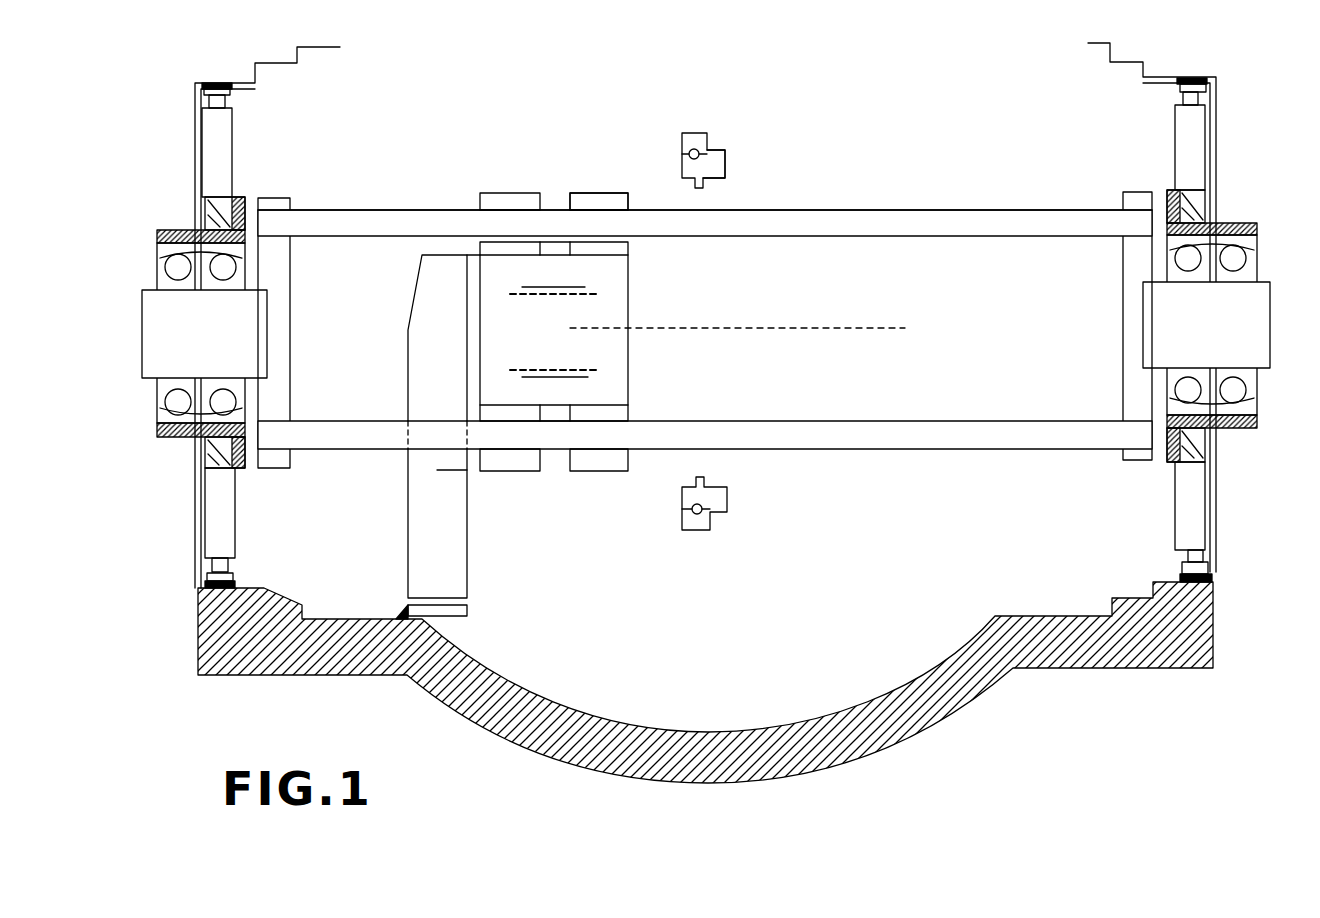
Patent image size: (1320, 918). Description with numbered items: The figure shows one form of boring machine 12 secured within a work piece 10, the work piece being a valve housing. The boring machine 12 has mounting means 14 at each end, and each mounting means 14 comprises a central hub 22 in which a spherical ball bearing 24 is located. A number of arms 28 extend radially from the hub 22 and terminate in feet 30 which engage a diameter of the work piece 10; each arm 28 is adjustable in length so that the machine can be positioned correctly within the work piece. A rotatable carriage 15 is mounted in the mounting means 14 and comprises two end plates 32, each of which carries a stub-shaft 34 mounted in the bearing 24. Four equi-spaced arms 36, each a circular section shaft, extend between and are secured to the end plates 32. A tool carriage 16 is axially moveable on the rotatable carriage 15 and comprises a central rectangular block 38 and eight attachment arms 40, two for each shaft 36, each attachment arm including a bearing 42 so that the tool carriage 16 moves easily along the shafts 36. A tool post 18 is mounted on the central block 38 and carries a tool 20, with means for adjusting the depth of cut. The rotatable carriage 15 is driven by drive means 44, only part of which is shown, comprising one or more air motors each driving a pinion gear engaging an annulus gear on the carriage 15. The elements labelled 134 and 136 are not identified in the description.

The work piece 10 is at (990, 685).
The boring machine 12 is at (830, 182).
The mounting means 14 is at (190, 130).
The rotatable carriage 15 is at (932, 210).
The tool carriage 16 is at (632, 298).
The tool post 18 is at (412, 303).
The tool 20 is at (470, 612).
The central hub 22 is at (160, 232).
The spherical ball bearing 24 is at (160, 416).
The arms 28 is at (222, 145).
The feet 30 is at (232, 88).
The end plates 32 is at (284, 208).
The stub-shaft 34 is at (160, 350).
The arms 36 is at (930, 236).
The central rectangular block 38 is at (612, 386).
The attachment arms 40 is at (580, 193).
The bearing 42 is at (616, 210).
The drive means 44 is at (708, 514).
The sensor 134 is at (698, 135).
The sensor element 136 is at (718, 167).